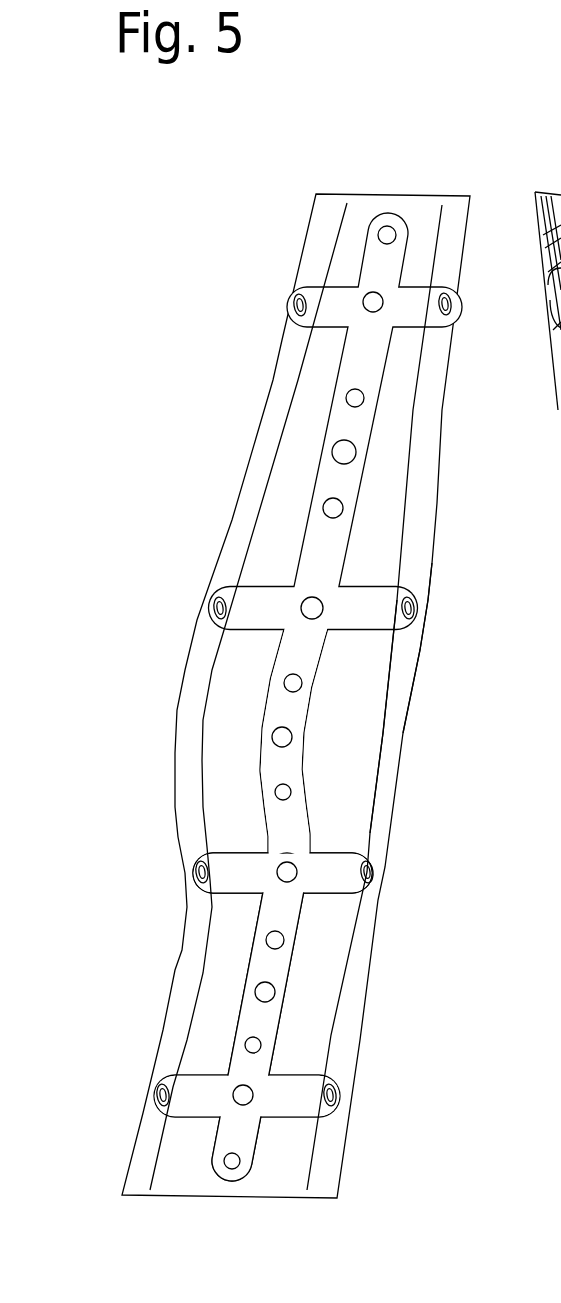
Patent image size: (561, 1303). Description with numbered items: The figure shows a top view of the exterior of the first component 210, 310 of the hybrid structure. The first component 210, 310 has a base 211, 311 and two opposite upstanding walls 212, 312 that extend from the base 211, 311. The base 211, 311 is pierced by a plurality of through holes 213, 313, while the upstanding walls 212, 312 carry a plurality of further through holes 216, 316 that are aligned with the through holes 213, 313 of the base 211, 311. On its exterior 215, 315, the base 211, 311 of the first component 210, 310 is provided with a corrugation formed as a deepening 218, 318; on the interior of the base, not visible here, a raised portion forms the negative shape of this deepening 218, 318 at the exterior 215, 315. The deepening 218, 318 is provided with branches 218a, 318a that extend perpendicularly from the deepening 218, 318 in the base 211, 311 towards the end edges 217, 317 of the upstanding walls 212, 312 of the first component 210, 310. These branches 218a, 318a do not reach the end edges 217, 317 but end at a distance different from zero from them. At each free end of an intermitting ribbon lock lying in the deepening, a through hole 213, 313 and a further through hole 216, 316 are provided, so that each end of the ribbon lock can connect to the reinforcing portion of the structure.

The first component 210 is at (296, 696).
The first component 310 is at (218, 396).
The base 211 is at (430, 716).
The base 311 is at (333, 727).
The upstanding wall 212 is at (316, 696).
The upstanding wall 312 is at (235, 555).
The through hole 213 is at (346, 739).
The through hole 313 is at (288, 874).
The exterior 215 is at (361, 697).
The exterior 315 is at (382, 438).
The further through hole 216 is at (277, 702).
The further through hole 316 is at (369, 872).
The end edge 217 is at (470, 648).
The end edge 317 is at (420, 650).
The deepening 218 is at (209, 1017).
The deepening 318 is at (262, 968).
The branch 218a is at (199, 884).
The branch 318a is at (245, 873).